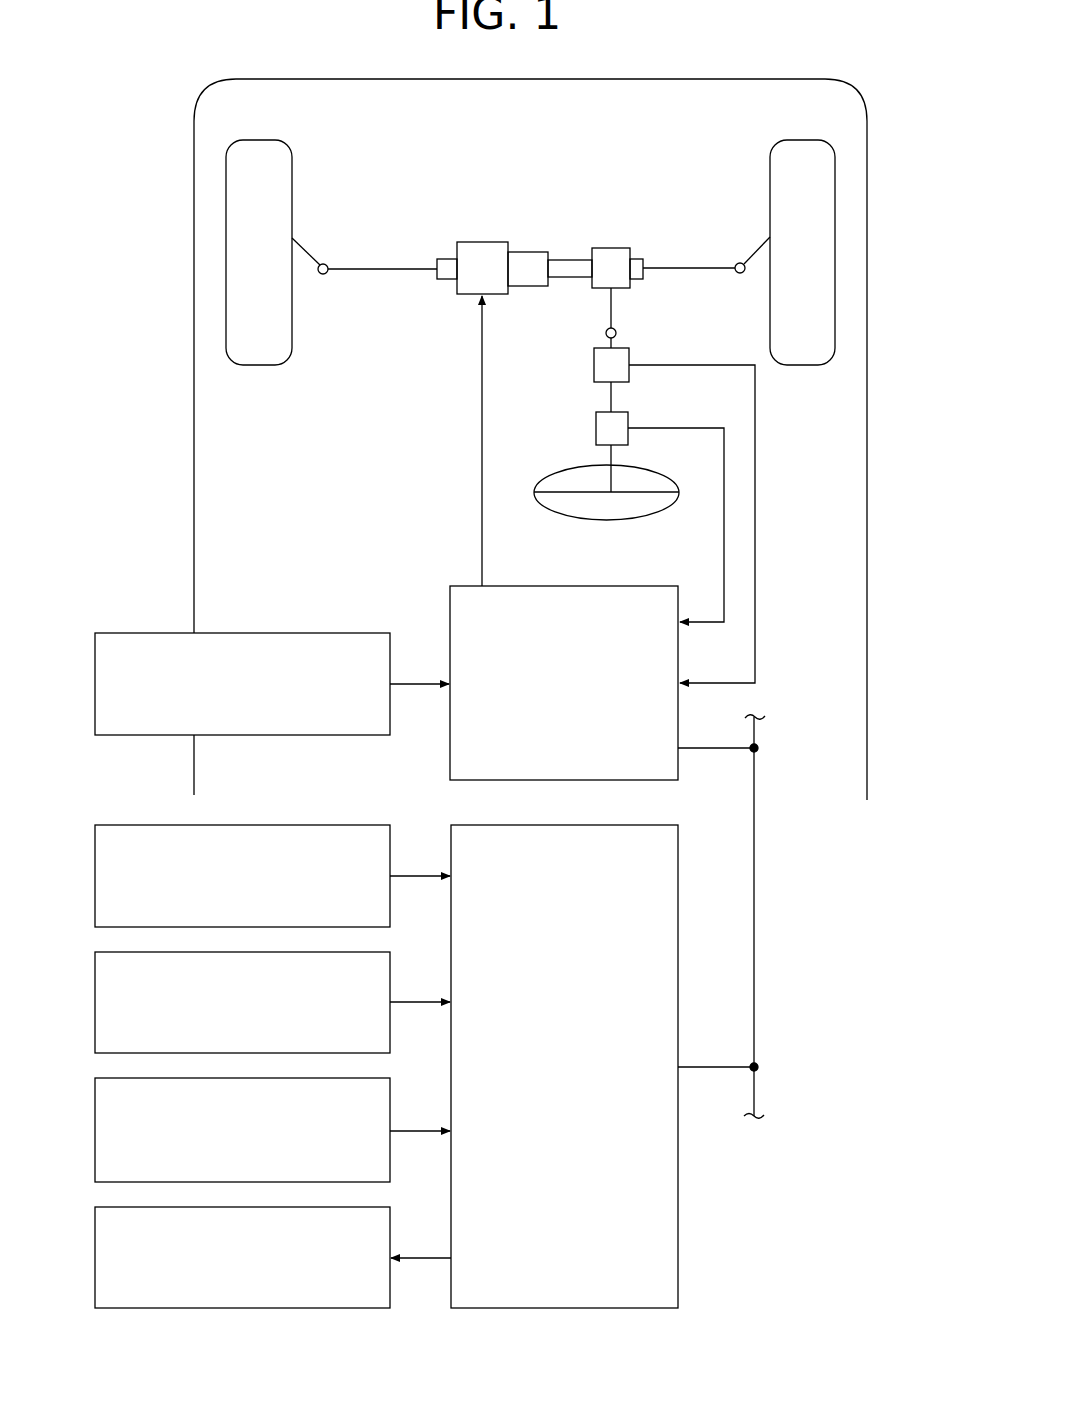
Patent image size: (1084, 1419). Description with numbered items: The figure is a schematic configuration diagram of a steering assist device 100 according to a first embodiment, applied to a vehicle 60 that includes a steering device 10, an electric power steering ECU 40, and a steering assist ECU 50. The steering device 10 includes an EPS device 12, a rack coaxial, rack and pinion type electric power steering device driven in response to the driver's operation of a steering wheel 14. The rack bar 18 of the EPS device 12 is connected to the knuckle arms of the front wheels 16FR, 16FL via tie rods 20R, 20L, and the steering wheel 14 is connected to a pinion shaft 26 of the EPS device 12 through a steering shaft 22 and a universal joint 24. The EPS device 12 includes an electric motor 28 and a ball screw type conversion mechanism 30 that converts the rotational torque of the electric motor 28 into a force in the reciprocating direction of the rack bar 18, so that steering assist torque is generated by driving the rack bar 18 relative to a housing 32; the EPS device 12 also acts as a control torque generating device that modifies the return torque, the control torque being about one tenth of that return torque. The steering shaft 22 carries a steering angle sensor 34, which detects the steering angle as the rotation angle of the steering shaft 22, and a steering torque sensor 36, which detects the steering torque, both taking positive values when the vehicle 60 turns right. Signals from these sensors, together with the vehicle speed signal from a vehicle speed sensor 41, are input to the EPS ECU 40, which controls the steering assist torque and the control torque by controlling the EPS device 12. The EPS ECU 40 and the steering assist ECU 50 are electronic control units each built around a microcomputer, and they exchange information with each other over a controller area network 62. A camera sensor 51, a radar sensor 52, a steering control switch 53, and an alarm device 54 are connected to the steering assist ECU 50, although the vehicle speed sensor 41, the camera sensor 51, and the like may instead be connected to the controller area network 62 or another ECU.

The steering assist device 100 is at (146, 168).
The vehicle 60 is at (868, 175).
The front wheel 16FL is at (226, 270).
The front wheel 16FR is at (835, 268).
The steering device 10 is at (586, 211).
The EPS device 12 is at (465, 323).
The tie rod 20L is at (306, 247).
The tie rod 20R is at (763, 245).
The rack bar 18 is at (388, 267).
The housing 32 is at (452, 281).
The electric motor 28 is at (489, 242).
The ball screw type conversion mechanism 30 is at (528, 287).
The pinion shaft 26 is at (612, 307).
The universal joint 24 is at (605, 333).
The steering torque sensor 36 is at (621, 374).
The steering shaft 22 is at (610, 395).
The steering angle sensor 34 is at (596, 433).
The steering wheel 14 is at (587, 518).
The electric power steering ECU 40 is at (587, 586).
The controller area network 62 is at (758, 909).
The steering assist ECU 50 is at (679, 1239).
The vehicle speed sensor 41 is at (93, 682).
The camera sensor 51 is at (93, 858).
The radar sensor 52 is at (93, 1002).
The steering control switch 53 is at (93, 1127).
The alarm device 54 is at (93, 1258).